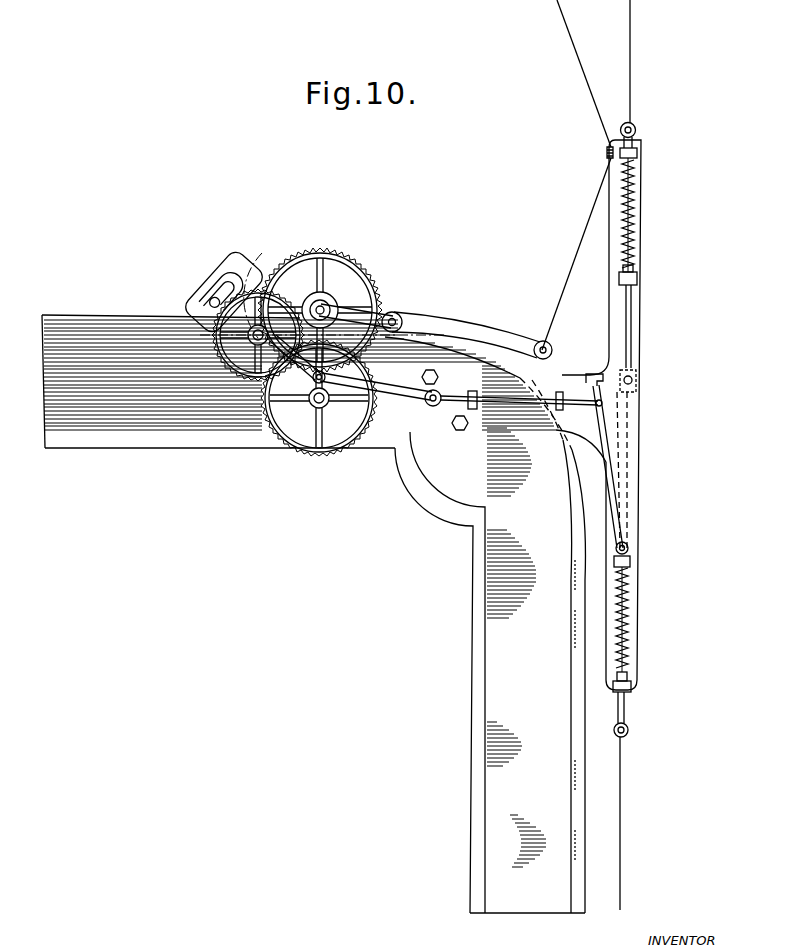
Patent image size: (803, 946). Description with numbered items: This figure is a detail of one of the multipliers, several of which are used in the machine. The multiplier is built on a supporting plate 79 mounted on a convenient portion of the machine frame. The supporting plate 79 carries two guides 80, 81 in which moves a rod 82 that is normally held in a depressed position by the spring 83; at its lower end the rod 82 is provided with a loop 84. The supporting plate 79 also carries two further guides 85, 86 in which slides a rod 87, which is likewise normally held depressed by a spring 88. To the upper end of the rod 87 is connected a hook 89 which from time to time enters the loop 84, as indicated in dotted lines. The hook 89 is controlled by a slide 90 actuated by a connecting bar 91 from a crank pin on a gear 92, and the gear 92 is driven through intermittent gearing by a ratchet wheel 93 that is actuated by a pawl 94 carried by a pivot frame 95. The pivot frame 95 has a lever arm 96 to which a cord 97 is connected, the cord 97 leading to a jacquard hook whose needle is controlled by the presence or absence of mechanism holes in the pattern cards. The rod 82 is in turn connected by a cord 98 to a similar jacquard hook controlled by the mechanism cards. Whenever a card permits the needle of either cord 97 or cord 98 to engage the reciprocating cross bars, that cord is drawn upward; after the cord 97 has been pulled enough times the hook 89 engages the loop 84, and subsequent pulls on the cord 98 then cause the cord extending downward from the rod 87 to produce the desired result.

The supporting plate 79 is at (440, 424).
The guide 80 is at (641, 147).
The guide 81 is at (633, 280).
The rod 82 is at (637, 318).
The spring 83 is at (632, 202).
The loop 84 is at (627, 383).
The guide 85 is at (627, 555).
The guide 86 is at (627, 683).
The rod 87 is at (620, 703).
The spring 88 is at (627, 612).
The hook 89 is at (610, 475).
The slide 90 is at (517, 403).
The connecting bar 91 is at (375, 432).
The gear 92 is at (320, 453).
The ratchet wheel 93 is at (341, 252).
The pawl 94 is at (404, 316).
The pivot frame 95 is at (353, 313).
The lever arm 96 is at (500, 340).
The cord 97 is at (592, 200).
The cord 98 is at (633, 25).